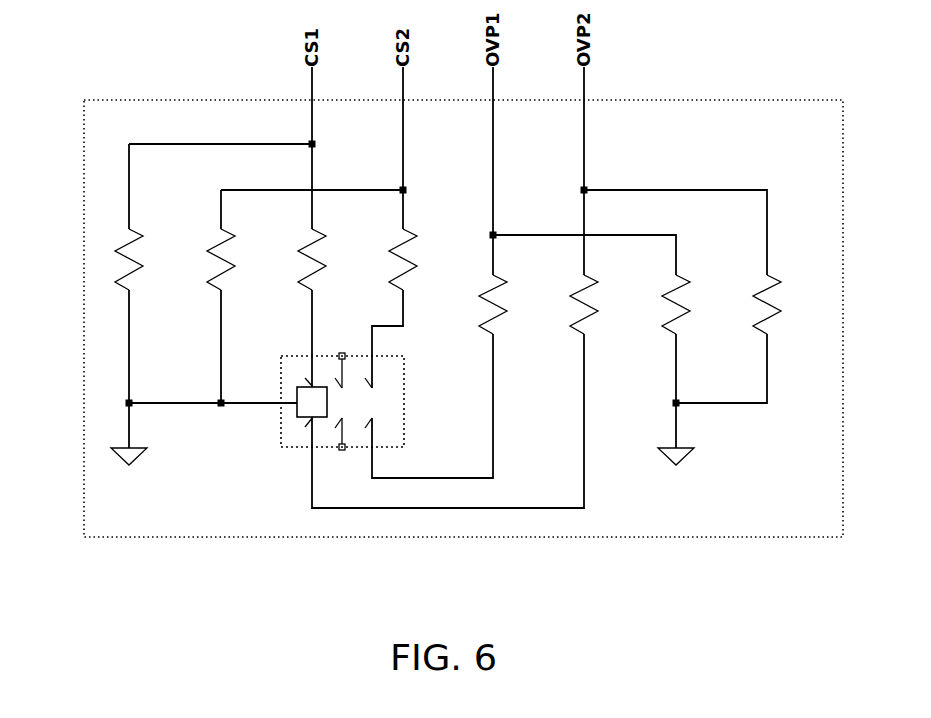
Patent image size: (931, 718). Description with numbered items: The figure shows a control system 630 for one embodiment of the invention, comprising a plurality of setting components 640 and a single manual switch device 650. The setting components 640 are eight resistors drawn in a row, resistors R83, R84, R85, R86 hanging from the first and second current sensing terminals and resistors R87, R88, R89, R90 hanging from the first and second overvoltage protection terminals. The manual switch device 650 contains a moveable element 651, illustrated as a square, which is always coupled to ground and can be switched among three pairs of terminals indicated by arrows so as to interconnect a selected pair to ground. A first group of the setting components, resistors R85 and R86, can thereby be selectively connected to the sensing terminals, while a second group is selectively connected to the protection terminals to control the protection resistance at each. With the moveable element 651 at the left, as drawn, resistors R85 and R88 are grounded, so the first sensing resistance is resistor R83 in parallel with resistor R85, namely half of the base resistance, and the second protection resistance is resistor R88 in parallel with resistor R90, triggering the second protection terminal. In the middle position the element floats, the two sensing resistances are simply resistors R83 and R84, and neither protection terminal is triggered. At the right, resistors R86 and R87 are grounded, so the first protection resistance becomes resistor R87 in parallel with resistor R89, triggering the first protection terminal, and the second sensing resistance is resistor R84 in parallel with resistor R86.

The control system 630 is at (750, 100).
The setting components 640 is at (68, 260).
The single manual switch device 650 is at (292, 452).
The moveable element 651 is at (310, 387).
The resistor R83 is at (153, 259).
The resistor R84 is at (244, 259).
The resistor R85 is at (335, 259).
The resistor R86 is at (426, 259).
The resistor R87 is at (517, 304).
The resistor R88 is at (607, 304).
The resistor R89 is at (699, 304).
The resistor R90 is at (790, 304).